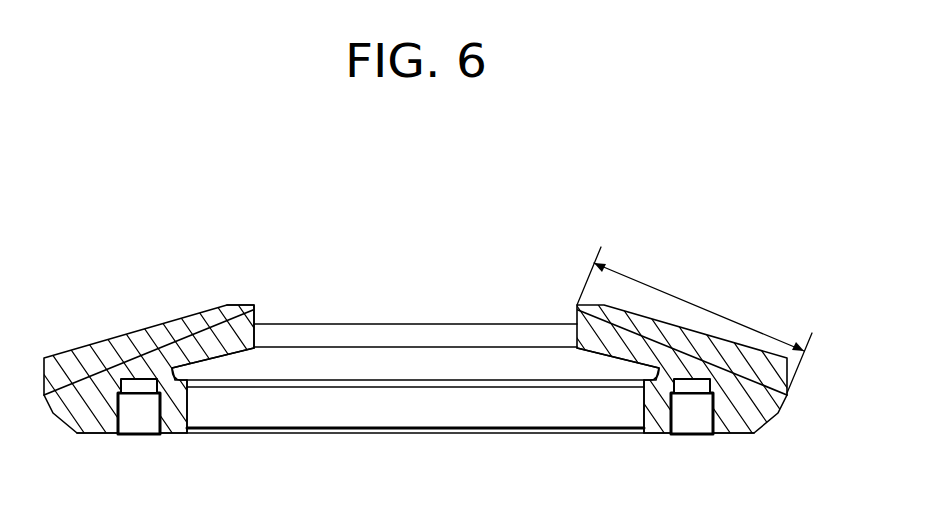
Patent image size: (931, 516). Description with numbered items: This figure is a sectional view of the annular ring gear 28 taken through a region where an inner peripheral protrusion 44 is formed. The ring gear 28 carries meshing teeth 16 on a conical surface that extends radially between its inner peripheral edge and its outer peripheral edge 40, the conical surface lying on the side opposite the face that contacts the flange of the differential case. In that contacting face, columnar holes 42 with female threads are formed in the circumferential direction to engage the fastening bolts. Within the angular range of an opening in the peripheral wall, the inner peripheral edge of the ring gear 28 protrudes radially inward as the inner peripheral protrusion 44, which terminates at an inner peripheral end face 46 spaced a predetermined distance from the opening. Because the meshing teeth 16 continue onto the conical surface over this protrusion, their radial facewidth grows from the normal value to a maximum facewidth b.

The ring gear 28 is at (195, 173).
The meshing teeth 16 is at (164, 326).
The inner peripheral end face 46 is at (256, 316).
The inner peripheral protrusion 44 is at (596, 324).
The outer peripheral edge 40 is at (779, 401).
The columnar hole 42 is at (131, 413).
The maximum facewidth b is at (677, 294).